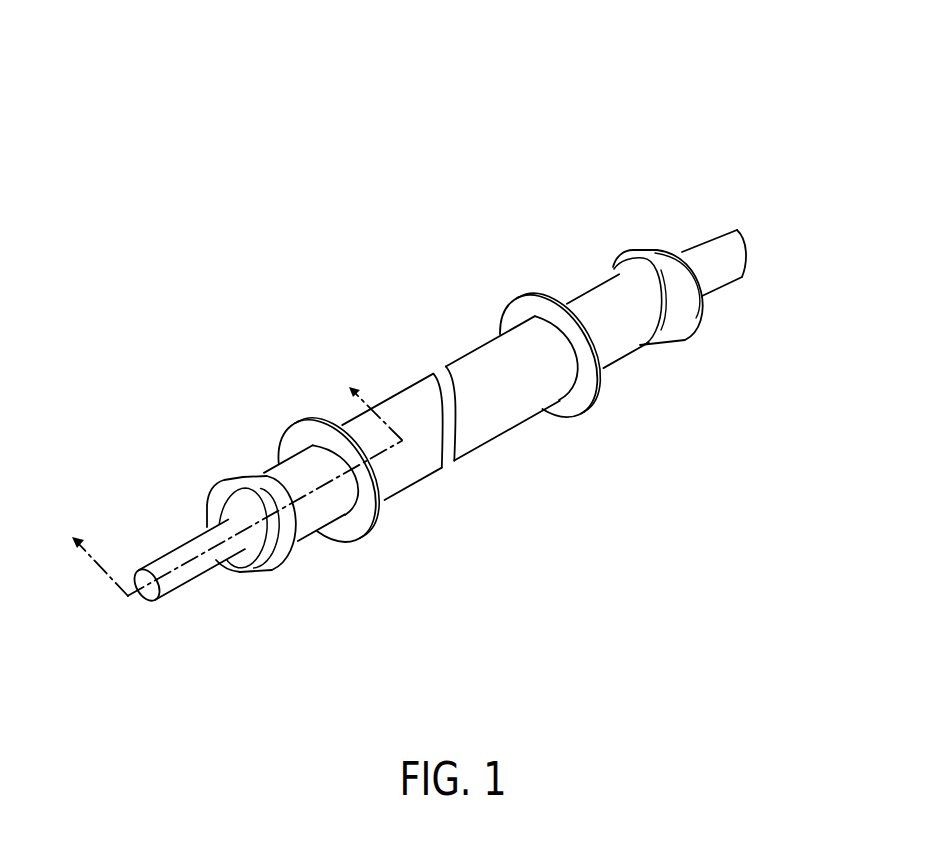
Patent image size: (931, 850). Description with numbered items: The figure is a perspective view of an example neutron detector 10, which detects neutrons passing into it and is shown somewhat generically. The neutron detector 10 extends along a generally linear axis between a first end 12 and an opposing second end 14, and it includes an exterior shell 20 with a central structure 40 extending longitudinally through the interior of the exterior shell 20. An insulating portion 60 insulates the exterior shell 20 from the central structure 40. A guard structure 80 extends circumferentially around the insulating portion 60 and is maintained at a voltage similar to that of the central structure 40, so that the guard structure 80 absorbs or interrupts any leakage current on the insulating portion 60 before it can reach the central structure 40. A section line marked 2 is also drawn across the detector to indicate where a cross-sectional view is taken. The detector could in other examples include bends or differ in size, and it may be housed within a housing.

The neutron detector 10 is at (554, 88).
The first end 12 is at (152, 603).
The second end 14 is at (733, 227).
The exterior shell 20 is at (507, 433).
The central structure 40 is at (198, 577).
The insulating portion 60 is at (263, 472).
The guard structure 80 is at (264, 575).
The section line 2- 2 is at (235, 475).